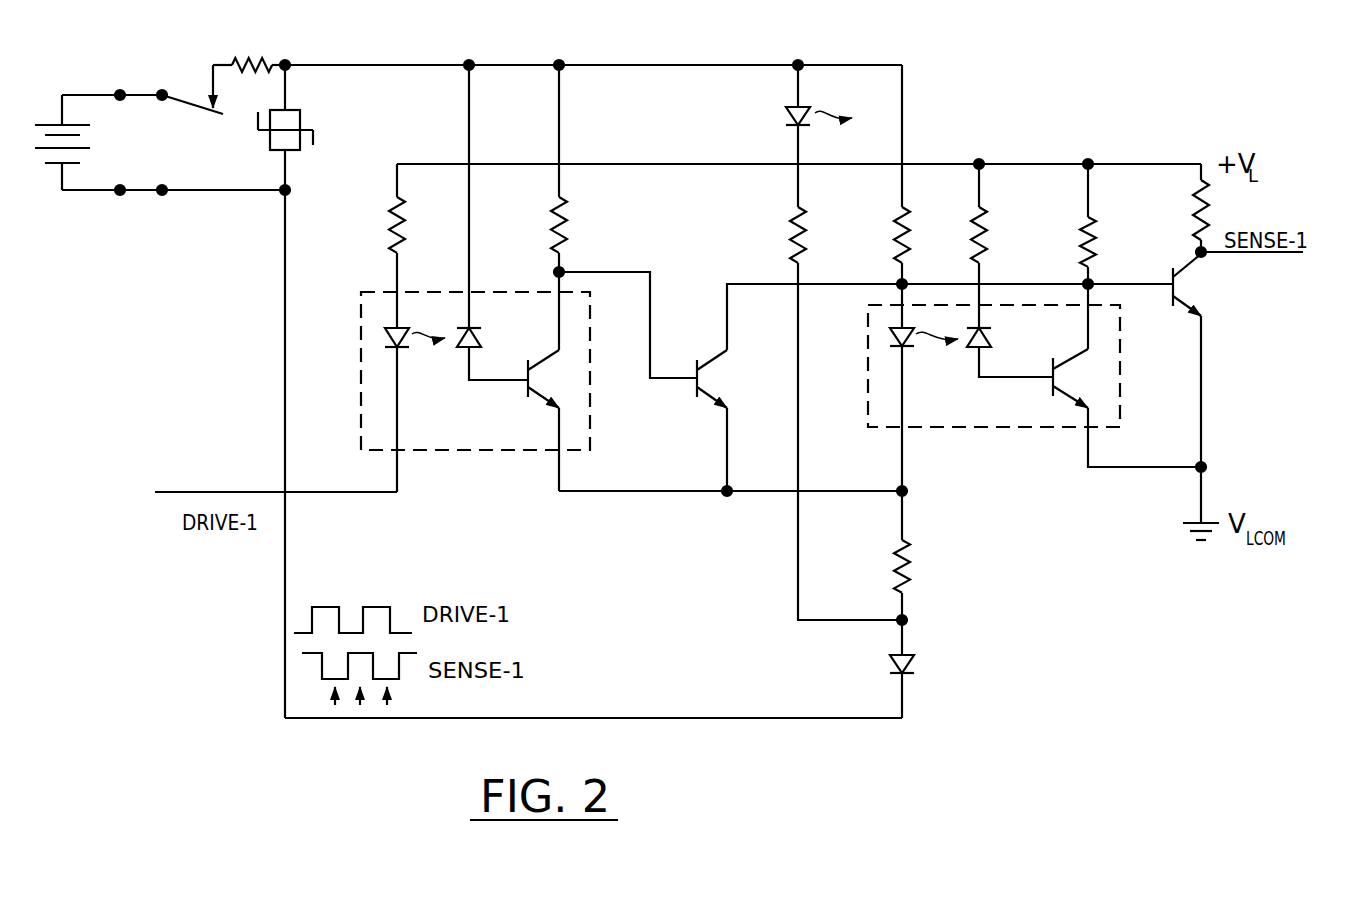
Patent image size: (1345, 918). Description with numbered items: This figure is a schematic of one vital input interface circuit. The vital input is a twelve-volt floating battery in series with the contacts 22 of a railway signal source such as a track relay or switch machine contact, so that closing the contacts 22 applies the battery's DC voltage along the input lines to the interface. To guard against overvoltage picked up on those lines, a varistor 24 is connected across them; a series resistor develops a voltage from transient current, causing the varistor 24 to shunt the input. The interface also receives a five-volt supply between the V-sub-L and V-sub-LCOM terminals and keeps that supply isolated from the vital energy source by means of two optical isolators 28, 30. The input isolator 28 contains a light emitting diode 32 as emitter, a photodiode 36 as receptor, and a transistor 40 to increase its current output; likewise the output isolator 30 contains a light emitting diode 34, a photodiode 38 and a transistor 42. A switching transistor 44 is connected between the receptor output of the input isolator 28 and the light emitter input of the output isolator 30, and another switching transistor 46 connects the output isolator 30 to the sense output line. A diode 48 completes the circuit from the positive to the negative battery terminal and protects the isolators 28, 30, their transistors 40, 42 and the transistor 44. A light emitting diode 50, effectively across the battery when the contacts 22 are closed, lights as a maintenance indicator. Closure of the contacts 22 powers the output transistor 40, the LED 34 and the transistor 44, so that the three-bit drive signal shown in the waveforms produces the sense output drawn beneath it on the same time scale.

The contacts 22 is at (213, 85).
The varistor 24 is at (300, 122).
The optical isolator 28 is at (500, 452).
The optical isolator 30 is at (1005, 428).
The light emitting diode 32 is at (385, 333).
The light emitting diode 34 is at (908, 348).
The photodiode 36 is at (482, 333).
The photodiode 38 is at (992, 339).
The transistor 40 is at (527, 392).
The transistor 42 is at (1052, 392).
The switching transistor 44 is at (697, 397).
The switching transistor 46 is at (1172, 282).
The diode 48 is at (914, 663).
The light emitting diode 50 is at (786, 116).